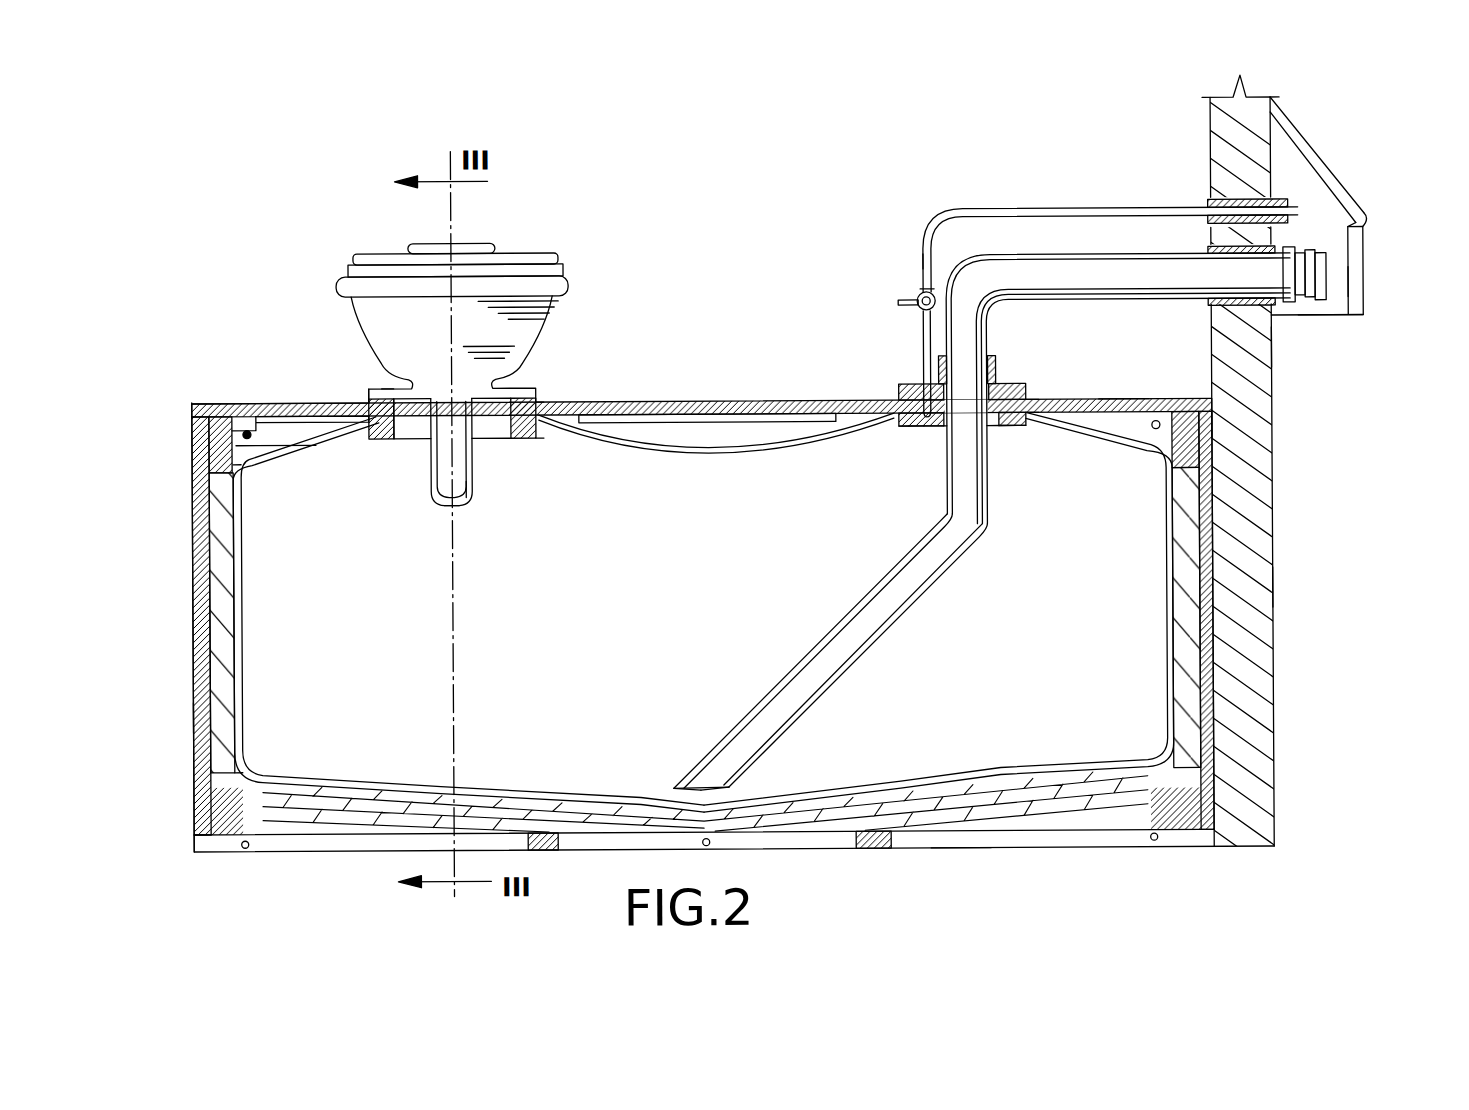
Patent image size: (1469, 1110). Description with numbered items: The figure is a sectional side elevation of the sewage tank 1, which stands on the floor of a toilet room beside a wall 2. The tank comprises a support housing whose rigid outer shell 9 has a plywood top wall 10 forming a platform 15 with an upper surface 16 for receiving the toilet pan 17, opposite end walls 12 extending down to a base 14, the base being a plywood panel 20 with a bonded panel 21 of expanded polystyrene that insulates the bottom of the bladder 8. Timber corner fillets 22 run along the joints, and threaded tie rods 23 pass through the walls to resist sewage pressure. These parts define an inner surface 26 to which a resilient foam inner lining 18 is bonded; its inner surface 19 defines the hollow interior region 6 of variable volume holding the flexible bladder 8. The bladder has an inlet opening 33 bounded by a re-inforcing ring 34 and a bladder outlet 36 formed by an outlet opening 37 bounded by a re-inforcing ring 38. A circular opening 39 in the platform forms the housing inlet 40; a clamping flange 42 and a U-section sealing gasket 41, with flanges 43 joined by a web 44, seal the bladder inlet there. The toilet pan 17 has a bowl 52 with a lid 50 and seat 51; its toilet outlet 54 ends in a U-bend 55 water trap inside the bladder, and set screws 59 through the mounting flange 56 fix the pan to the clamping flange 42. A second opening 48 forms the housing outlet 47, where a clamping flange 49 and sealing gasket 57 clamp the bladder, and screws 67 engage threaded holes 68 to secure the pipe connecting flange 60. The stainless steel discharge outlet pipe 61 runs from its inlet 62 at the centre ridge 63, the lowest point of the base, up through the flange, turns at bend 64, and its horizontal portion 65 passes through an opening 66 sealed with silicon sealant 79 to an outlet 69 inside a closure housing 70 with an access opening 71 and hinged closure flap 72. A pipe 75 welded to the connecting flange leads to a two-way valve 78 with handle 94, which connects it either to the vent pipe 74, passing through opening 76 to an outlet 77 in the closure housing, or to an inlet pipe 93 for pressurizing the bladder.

The sewage tank 1 is at (256, 298).
The wall 2 is at (1282, 636).
The hollow interior region 6 is at (233, 462).
The bladder 8 is at (245, 660).
The outer shell 9 is at (195, 712).
The top wall 10 is at (1125, 400).
The end walls 12 is at (205, 615).
The base 14 is at (958, 850).
The platform 15 is at (706, 400).
The upper surface 16 is at (300, 400).
The toilet pan 17 is at (513, 246).
The inner lining 18 is at (220, 560).
The inner surface 19 is at (720, 447).
The plywood panel 20 is at (1083, 851).
The panel of expanded polystyrene material 21 is at (332, 806).
The corner fillets 22 is at (200, 830).
The threaded tie rods 23 is at (248, 426).
The inner surface 26 is at (1282, 592).
The inlet opening 33 is at (518, 440).
The re-inforcing ring 34 is at (545, 440).
The bladder outlet 36 is at (1005, 440).
The outlet opening 37 is at (1030, 437).
The re-inforcing ring 38 is at (1040, 425).
The opening 39 is at (545, 405).
The housing inlet 40 is at (482, 432).
The sealing gasket 41 is at (418, 418).
The clamping flange 42 is at (395, 424).
The flanges 43 is at (368, 432).
The web 44 is at (438, 422).
The housing outlet 47 is at (940, 432).
The opening 48 is at (1040, 405).
The clamping flange 49 is at (900, 437).
The lid 50 is at (479, 306).
The seat 51 is at (357, 262).
The bowl 52 is at (553, 320).
The toilet outlet 54 is at (475, 496).
The U-bend 55 is at (456, 506).
The mounting flange 56 is at (370, 388).
The sealing gasket 57 is at (930, 432).
The set screws 59 is at (377, 378).
The pipe connecting flange 60 is at (925, 392).
The discharge outlet pipe 61 is at (905, 612).
The inlet 62 is at (740, 790).
The centre ridge 63 is at (672, 790).
The bend 64 is at (992, 270).
The portion of the discharge pipe 65 is at (1130, 268).
The opening 66 is at (1267, 348).
The screws 67 is at (905, 392).
The threaded holes 68 is at (915, 440).
The outlet 69 is at (1326, 272).
The closure housing 70 is at (1345, 184).
The access opening 71 is at (1357, 284).
The hinged closure flap 72 is at (1366, 313).
The vent pipe 74 is at (962, 210).
The pipe 75 is at (918, 302).
The opening 76 is at (1275, 182).
The outlet 77 is at (1370, 222).
The two-way valve 78 is at (925, 262).
The silicon sealant 79 is at (1225, 204).
The inlet pipe 93 is at (905, 298).
The handle 94 is at (920, 292).